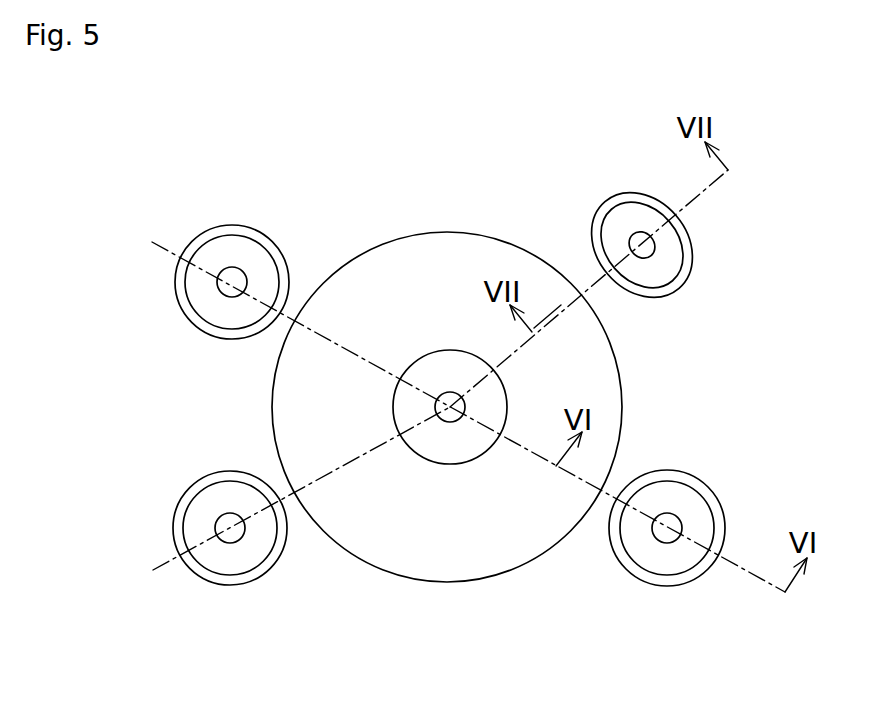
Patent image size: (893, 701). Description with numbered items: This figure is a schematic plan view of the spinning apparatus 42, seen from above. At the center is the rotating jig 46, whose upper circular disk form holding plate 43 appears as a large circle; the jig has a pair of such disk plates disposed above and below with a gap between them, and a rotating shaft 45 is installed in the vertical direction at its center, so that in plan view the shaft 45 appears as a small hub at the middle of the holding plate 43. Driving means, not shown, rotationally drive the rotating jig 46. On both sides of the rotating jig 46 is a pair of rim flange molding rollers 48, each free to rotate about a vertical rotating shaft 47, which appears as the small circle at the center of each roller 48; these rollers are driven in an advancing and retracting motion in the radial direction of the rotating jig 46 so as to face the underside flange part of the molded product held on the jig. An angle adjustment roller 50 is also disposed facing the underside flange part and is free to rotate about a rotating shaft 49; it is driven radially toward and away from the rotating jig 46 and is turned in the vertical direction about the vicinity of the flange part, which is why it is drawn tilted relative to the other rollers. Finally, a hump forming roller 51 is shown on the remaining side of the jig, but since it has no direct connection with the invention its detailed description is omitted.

The spinning apparatus 42 is at (395, 193).
The holding plate 43 is at (462, 253).
The rotating shaft 45 is at (451, 392).
The rotating jig 46 is at (390, 587).
The rotating shaft 47 is at (232, 267).
The rim flange molding roller 48 is at (267, 237).
The rotating shaft 49 is at (634, 232).
The angle adjustment roller 50 is at (677, 286).
The hump forming roller 51 is at (202, 486).